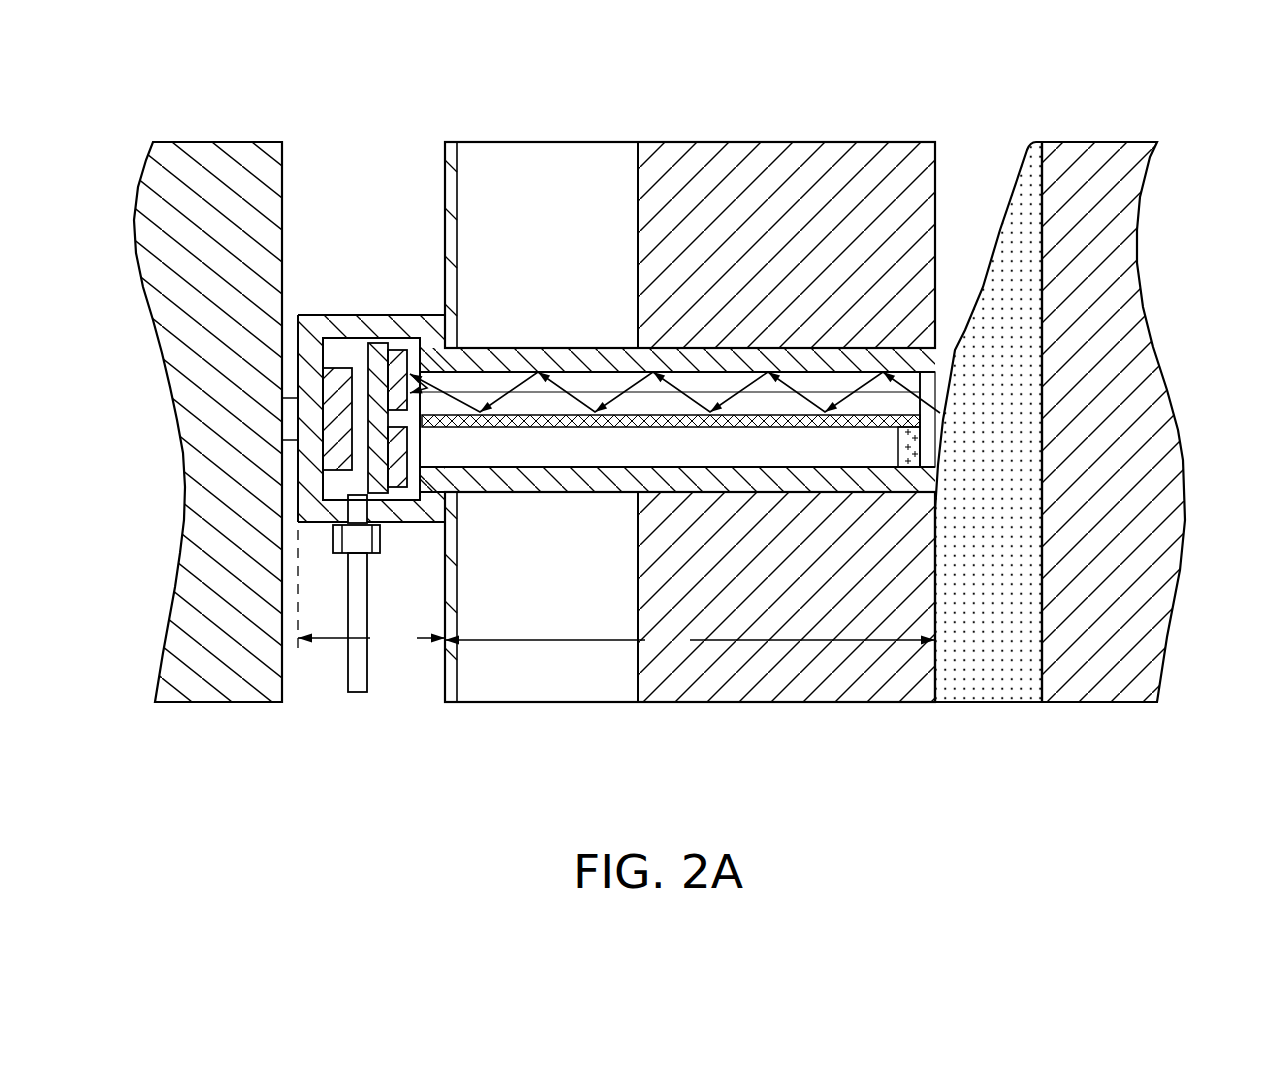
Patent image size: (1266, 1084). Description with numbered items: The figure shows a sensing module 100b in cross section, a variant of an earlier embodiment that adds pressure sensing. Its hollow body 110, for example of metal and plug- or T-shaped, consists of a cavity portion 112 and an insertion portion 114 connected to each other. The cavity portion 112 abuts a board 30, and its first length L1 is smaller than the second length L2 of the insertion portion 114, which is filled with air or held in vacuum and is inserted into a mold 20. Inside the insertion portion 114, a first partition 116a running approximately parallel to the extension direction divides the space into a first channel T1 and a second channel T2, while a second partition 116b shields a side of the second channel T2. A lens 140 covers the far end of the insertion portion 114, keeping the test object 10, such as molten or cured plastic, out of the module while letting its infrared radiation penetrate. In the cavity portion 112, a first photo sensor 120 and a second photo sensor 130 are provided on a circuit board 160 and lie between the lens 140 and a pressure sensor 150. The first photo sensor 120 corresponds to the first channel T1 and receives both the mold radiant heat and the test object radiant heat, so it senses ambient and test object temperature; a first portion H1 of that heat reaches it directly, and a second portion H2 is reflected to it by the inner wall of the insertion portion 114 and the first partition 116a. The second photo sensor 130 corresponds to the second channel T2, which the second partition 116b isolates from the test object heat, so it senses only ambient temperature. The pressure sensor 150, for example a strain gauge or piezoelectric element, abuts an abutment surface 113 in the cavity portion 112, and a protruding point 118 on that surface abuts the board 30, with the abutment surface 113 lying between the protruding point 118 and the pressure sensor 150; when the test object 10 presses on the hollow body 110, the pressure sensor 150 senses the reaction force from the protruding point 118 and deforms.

The test object 10 is at (998, 285).
The mold 20 is at (864, 162).
The board 30 is at (283, 197).
The sensing module 100b is at (1088, 762).
The hollow body 110 is at (675, 261).
The cavity portion 112 is at (425, 322).
The abutment surface 113 is at (330, 345).
The insertion portion 114 is at (551, 352).
The first partition 116a is at (812, 427).
The second partition 116b is at (908, 456).
The protruding point 118 is at (282, 410).
The first photo sensor 120 is at (394, 353).
The second photo sensor 130 is at (395, 478).
The lens 140 is at (928, 440).
The pressure sensor 150 is at (328, 453).
The circuit board 160 is at (376, 356).
The first channel T1 is at (612, 372).
The second channel T2 is at (605, 456).
The first length L1 is at (371, 593).
The second length L2 is at (690, 645).
The first portion of the test object radiant heat H1 is at (435, 396).
The second portion of the test object radiant heat H2 is at (727, 372).